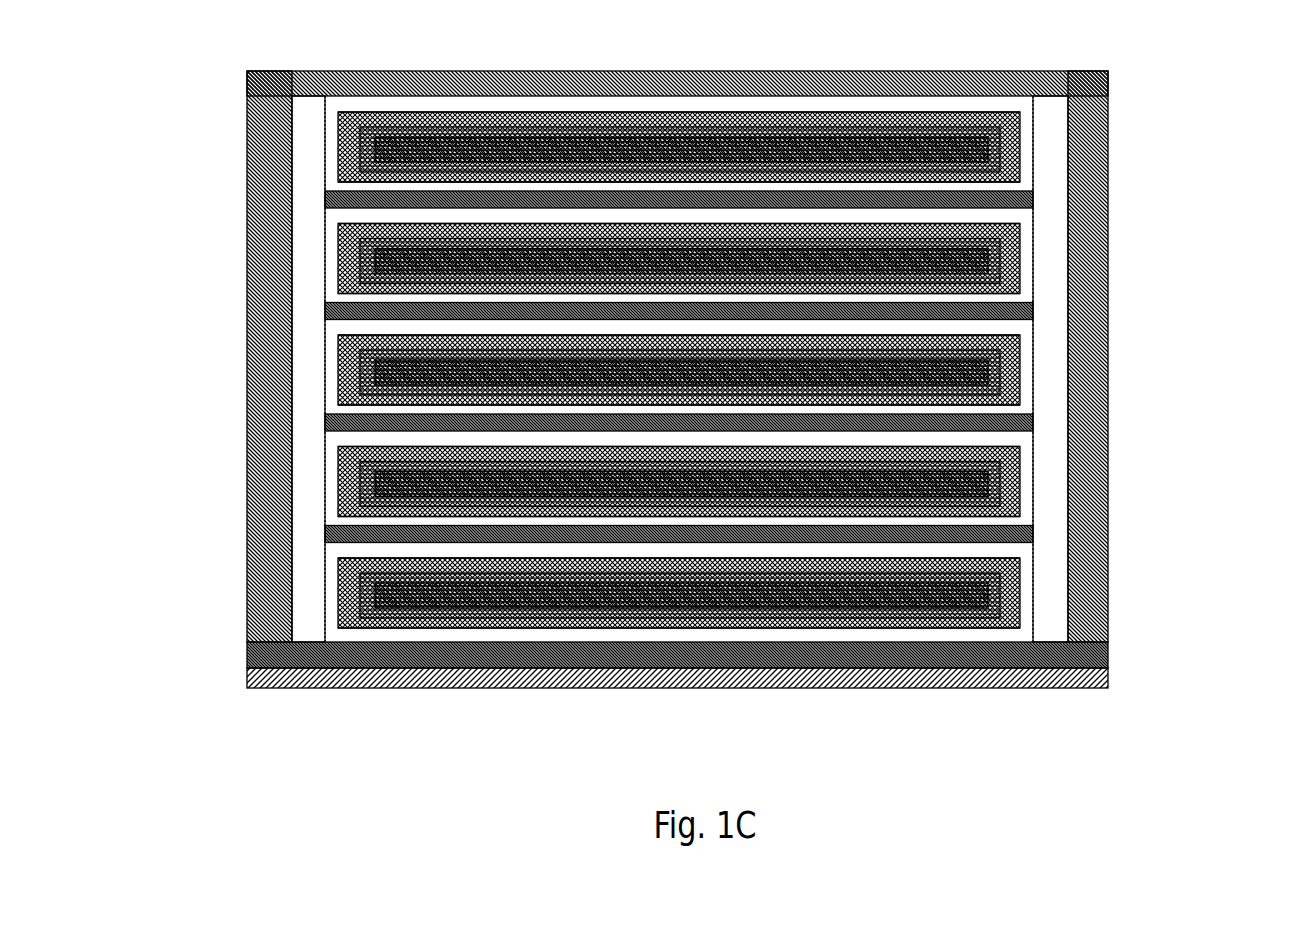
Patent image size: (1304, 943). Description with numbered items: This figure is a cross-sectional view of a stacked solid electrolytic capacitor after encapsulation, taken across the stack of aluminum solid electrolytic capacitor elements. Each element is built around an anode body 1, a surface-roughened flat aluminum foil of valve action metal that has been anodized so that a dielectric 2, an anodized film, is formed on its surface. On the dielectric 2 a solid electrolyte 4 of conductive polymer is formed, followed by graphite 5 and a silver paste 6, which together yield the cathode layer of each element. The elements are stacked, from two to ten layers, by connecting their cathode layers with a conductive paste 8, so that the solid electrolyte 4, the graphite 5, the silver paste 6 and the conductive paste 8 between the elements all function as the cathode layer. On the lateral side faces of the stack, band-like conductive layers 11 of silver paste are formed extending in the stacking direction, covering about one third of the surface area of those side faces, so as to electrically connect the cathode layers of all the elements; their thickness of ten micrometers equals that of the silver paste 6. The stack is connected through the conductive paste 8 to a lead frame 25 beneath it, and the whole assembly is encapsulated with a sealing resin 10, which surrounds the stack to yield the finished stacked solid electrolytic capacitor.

The anode body 1 is at (985, 598).
The dielectric 2 is at (1000, 582).
The solid electrolyte 4 is at (990, 500).
The graphite 5 is at (1025, 395).
The silver paste 6 is at (1025, 334).
The conductive paste 8 is at (290, 650).
The sealing resin 10 is at (1108, 80).
The conductive layer 11 is at (318, 240).
The lead frame 25 is at (590, 686).